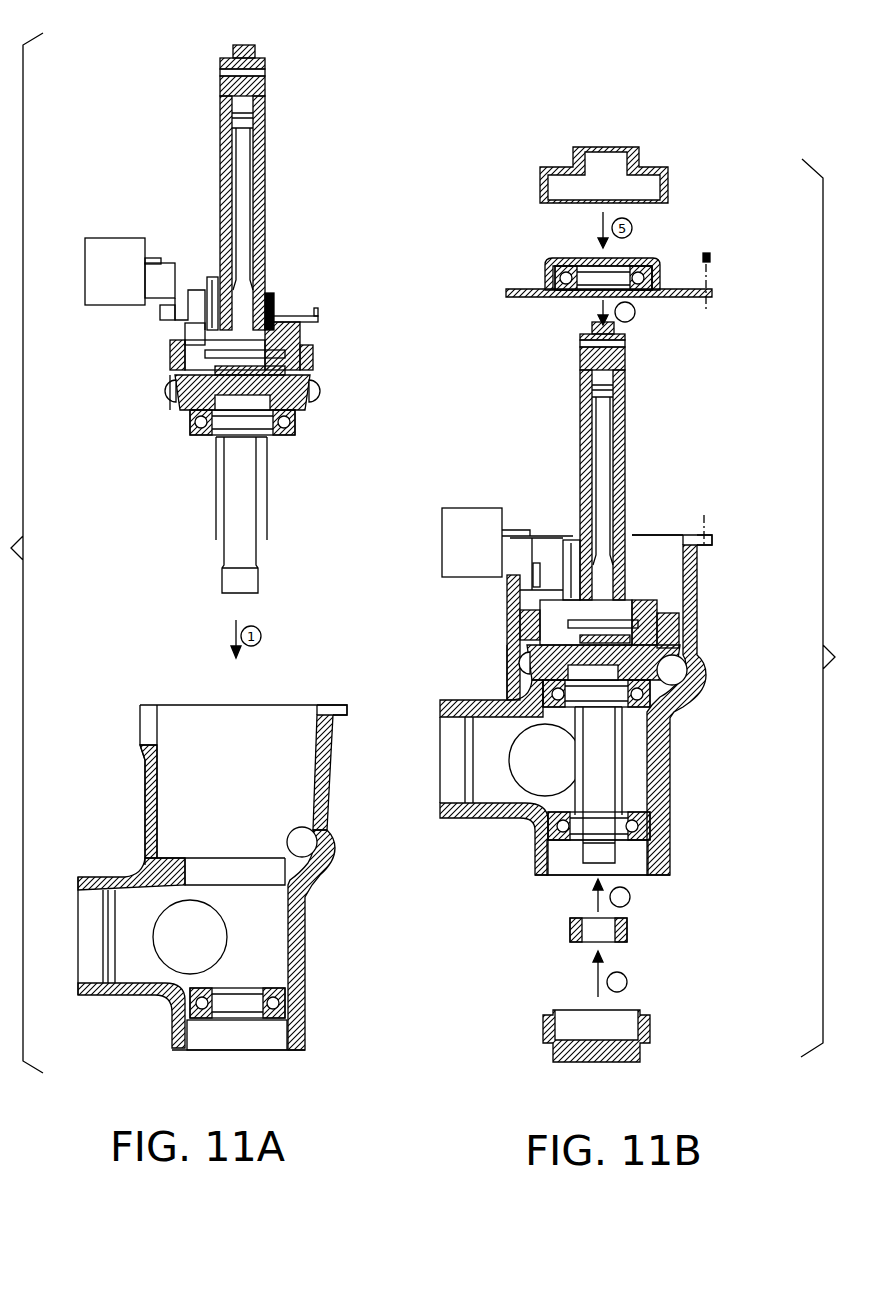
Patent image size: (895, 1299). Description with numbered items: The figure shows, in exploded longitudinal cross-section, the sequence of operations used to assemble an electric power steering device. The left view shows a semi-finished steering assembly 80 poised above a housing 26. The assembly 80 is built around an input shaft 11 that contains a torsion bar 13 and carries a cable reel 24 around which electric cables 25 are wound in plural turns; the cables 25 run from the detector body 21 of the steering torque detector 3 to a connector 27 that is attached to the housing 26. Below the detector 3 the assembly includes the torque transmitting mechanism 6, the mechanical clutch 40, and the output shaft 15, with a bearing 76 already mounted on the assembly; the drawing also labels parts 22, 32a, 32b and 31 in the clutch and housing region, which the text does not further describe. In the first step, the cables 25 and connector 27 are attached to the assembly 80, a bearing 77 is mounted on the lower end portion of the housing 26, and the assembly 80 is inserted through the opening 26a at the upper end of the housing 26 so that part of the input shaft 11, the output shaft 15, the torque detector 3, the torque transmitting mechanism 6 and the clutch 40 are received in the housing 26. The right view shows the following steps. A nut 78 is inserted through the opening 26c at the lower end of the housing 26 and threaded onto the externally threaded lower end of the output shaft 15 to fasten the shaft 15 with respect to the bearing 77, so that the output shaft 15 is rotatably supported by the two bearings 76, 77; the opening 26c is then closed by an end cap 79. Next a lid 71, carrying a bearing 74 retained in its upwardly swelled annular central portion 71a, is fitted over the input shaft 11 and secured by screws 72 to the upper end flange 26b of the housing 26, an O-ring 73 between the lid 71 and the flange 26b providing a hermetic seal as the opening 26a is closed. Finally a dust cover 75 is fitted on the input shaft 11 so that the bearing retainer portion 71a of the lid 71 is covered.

In FIG. 11A, the semi-finished steering assembly 80 is at (157, 100).
In FIG. 11A, the input shaft 11 is at (263, 146).
In FIG. 11B, the input shaft 11 is at (622, 430).
In FIG. 11A, the torsion bar 13 is at (245, 190).
In FIG. 11A, the electric cables 25 is at (272, 300).
In FIG. 11A, the cable reel 24 is at (303, 315).
In FIG. 11A, the connector 27 is at (108, 240).
In FIG. 11B, the connector 27 is at (442, 550).
In FIG. 11A, the steering torque detector 3 is at (208, 265).
In FIG. 11B, the steering torque detector 3 is at (565, 540).
In FIG. 11A, the detector body 21 is at (207, 283).
In FIG. 11A, the retainer block 22 is at (185, 332).
In FIG. 11A, the mechanical clutch 40 is at (314, 340).
In FIG. 11B, the mechanical clutch 40 is at (672, 607).
In FIG. 11A, the upper ring 32b is at (310, 363).
In FIG. 11A, the lower ring 32a is at (305, 395).
In FIG. 11A, the torque transmitting mechanism 6 is at (166, 388).
In FIG. 11B, the torque transmitting mechanism 6 is at (708, 650).
In FIG. 11A, the bearing 76 is at (295, 425).
In FIG. 11B, the bearing 76 is at (662, 700).
In FIG. 11A, the output shaft 15 is at (246, 492).
In FIG. 11B, the output shaft 15 is at (602, 778).
In FIG. 11A, the housing 26 is at (327, 770).
In FIG. 11B, the housing 26 is at (693, 570).
In FIG. 11A, the opening 26a is at (310, 727).
In FIG. 11B, the opening 26a is at (660, 540).
In FIG. 11B, the upper end flange 26b is at (715, 542).
In FIG. 11A, the opening 26c is at (280, 1042).
In FIG. 11B, the opening 26c is at (552, 857).
In FIG. 11A, the ball 31 is at (325, 838).
In FIG. 11B, the ball 31 is at (695, 685).
In FIG. 11A, the bearing 77 is at (295, 1010).
In FIG. 11B, the bearing 77 is at (660, 832).
In FIG. 11B, the dust cover 75 is at (656, 172).
In FIG. 11B, the bearing 74 is at (640, 260).
In FIG. 11B, the lid 71 is at (665, 300).
In FIG. 11B, the annular central portion 71a is at (665, 285).
In FIG. 11B, the screw 72 is at (715, 258).
In FIG. 11B, the O-ring 73 is at (690, 540).
In FIG. 11B, the nut 78 is at (630, 938).
In FIG. 11B, the end cap 79 is at (652, 1033).